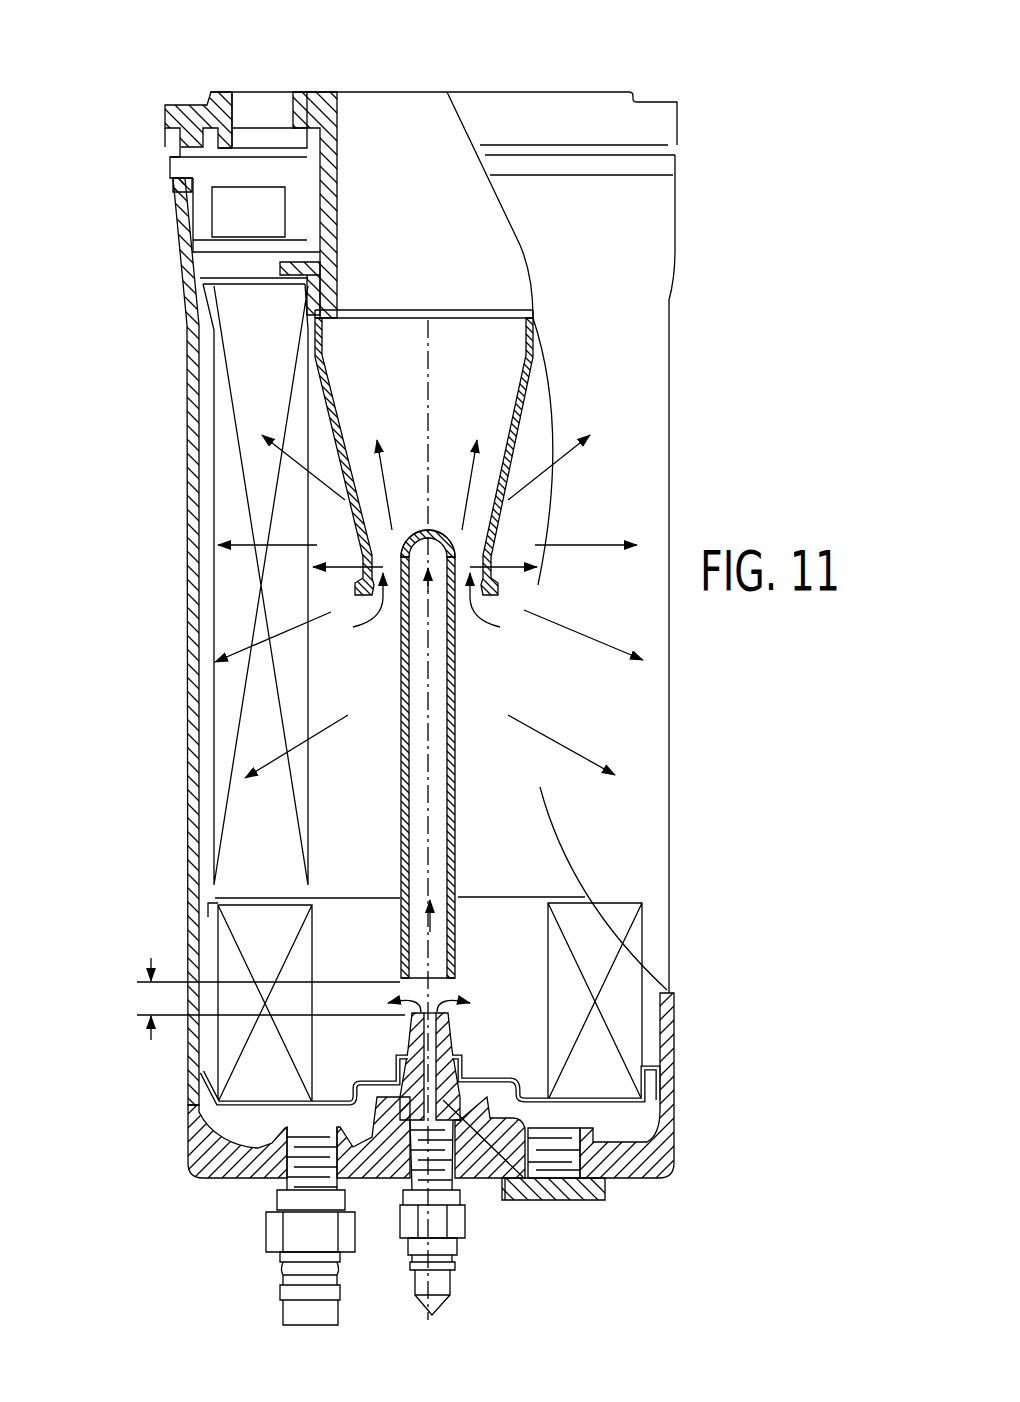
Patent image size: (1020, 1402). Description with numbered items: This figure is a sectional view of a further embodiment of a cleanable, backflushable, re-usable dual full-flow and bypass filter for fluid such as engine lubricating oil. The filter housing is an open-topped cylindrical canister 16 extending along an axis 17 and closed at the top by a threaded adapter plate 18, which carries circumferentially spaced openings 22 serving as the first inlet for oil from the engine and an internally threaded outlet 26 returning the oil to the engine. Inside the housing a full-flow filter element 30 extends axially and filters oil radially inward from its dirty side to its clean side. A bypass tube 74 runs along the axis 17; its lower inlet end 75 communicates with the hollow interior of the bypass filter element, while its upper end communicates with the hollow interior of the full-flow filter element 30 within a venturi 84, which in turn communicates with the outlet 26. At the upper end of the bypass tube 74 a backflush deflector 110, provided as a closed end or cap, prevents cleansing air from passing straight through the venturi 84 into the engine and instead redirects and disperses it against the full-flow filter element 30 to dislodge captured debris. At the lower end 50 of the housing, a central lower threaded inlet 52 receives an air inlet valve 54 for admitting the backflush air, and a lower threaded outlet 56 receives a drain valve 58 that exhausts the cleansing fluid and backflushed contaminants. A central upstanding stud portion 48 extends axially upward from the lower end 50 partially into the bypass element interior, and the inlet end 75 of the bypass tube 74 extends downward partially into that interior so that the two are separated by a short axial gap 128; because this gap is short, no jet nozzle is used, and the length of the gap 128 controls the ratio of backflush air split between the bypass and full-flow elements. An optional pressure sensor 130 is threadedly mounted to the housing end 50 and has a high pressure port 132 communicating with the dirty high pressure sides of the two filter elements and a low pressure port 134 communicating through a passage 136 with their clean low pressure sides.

The canister 16 is at (185, 462).
The axis 17 is at (430, 420).
The adapter plate 18 is at (188, 103).
The openings 22 is at (290, 100).
The outlet 26 is at (338, 117).
The full-flow filter element 30 is at (216, 590).
The stud portion 48 is at (457, 1027).
The lower end 50 is at (202, 1180).
The inlet 52 is at (458, 1185).
The air inlet valve 54 is at (463, 1237).
The outlet 56 is at (283, 1183).
The drain valve 58 is at (275, 1250).
The bypass tube 74 is at (458, 712).
The lower inlet end 75 is at (458, 957).
The venturi 84 is at (508, 448).
The backflush deflector 110 is at (428, 532).
The axial gap 128 is at (150, 997).
The pressure sensor 130 is at (590, 1201).
The high pressure port 132 is at (560, 1122).
The low pressure port 134 is at (534, 1201).
The passage 136 is at (500, 1135).